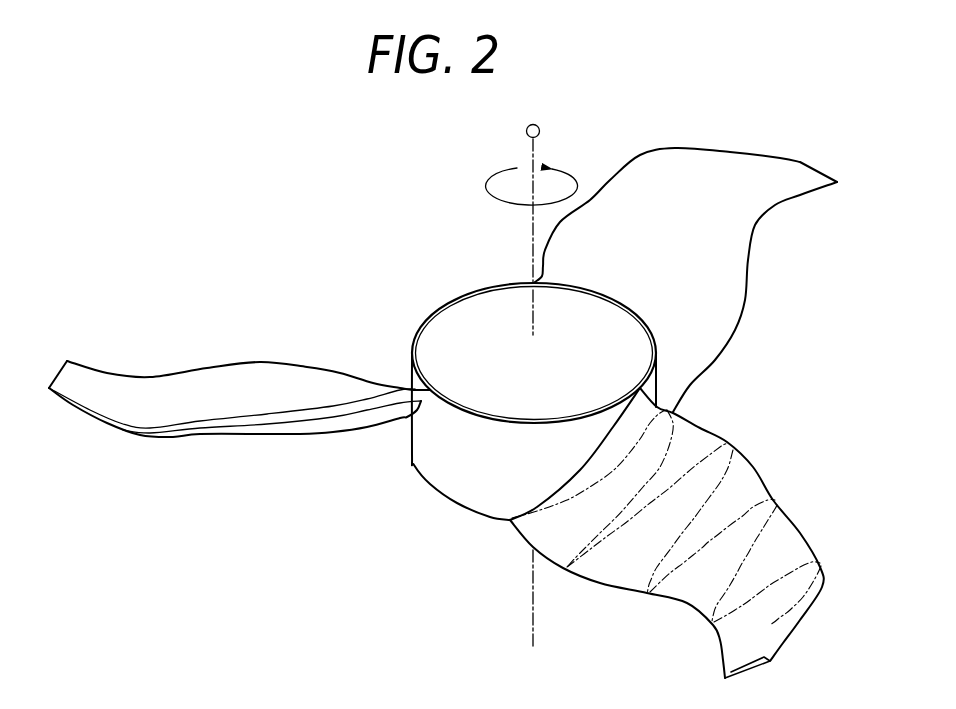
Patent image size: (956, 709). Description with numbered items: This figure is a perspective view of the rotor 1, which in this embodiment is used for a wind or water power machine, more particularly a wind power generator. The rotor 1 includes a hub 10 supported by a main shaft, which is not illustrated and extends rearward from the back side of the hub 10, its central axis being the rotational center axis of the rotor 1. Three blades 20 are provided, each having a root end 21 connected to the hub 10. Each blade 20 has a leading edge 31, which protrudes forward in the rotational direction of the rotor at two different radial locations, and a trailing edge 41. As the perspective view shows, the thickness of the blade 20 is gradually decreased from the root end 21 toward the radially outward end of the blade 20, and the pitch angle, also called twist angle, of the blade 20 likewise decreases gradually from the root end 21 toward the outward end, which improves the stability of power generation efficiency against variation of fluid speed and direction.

The rotor 1 is at (449, 205).
The hub 10 is at (441, 330).
The blade 20 is at (224, 406).
The root end 21 is at (568, 488).
The leading edge 31 is at (727, 440).
The trailing edge 41 is at (617, 593).